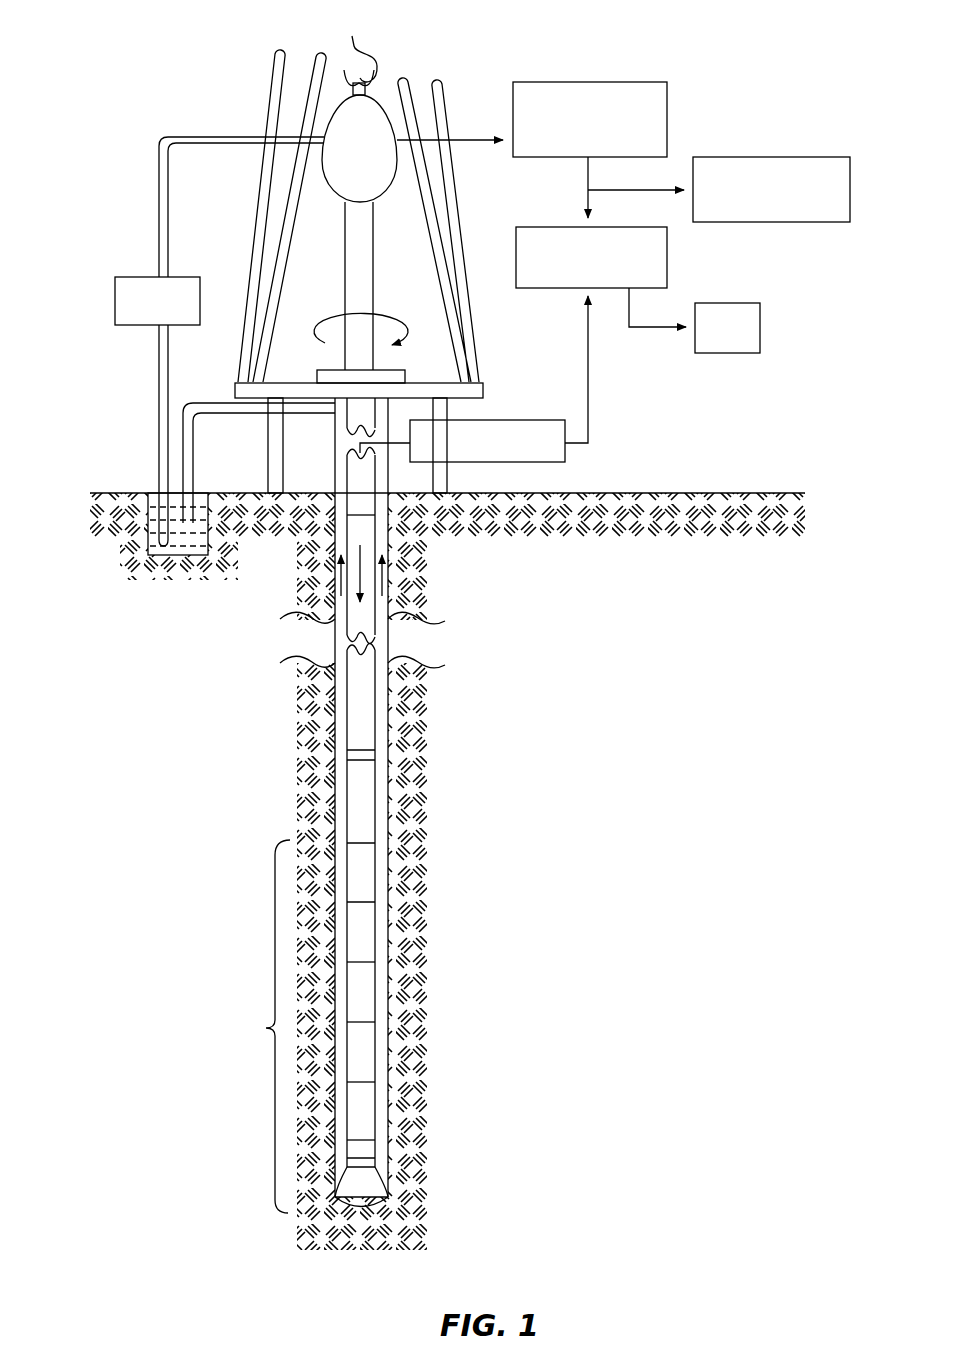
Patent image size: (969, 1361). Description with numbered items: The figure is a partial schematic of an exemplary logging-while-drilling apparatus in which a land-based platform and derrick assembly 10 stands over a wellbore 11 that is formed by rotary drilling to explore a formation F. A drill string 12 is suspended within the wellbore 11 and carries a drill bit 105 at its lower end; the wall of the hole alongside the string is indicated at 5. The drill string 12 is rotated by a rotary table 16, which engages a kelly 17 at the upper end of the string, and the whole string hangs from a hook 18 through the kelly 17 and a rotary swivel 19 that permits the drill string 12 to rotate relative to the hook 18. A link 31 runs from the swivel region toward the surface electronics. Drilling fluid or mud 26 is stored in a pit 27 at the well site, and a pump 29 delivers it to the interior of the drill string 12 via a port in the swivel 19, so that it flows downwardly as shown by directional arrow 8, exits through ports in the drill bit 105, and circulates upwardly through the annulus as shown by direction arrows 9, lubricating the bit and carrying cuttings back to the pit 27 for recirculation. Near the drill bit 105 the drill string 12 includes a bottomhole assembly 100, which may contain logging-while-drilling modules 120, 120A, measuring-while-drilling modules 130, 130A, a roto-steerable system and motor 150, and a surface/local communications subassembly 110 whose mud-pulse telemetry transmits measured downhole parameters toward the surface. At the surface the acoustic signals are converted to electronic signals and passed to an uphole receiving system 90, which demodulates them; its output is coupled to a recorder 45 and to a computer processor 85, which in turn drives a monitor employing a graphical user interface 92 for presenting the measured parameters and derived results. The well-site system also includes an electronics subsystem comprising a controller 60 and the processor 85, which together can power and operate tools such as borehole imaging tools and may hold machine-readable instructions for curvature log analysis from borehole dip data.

The platform and derrick assembly 10 is at (160, 86).
The hook 18 is at (352, 42).
The rotary swivel 19 is at (342, 168).
The kelly 17 is at (362, 225).
The telemetry link to receiver 31 is at (398, 147).
The rotary table 16 is at (398, 372).
The drill string 12 is at (358, 506).
The wellbore 11 is at (383, 506).
The pump 29 is at (134, 326).
The pit 27 is at (150, 485).
The drilling fluid or mud 26 is at (193, 557).
The direction arrows 9 is at (342, 580).
The directional arrow 8 is at (358, 607).
The borehole wall 5 is at (300, 727).
The formation F is at (541, 530).
The controller 60 is at (565, 460).
The uphole receiving system 90 is at (612, 82).
The recorder 45 is at (775, 157).
The computer processor 85 is at (667, 258).
The graphical user interface 92 is at (760, 330).
The bottomhole assembly 100 is at (257, 1026).
The surface/local communications subassembly 110 is at (368, 877).
The logging-while-drilling module 120 is at (368, 936).
The measuring-while-drilling module 130 is at (378, 983).
The logging-while-drilling module 120A is at (368, 1046).
The measuring-while-drilling module 130A is at (368, 1113).
The roto-steerable system and motor 150 is at (368, 1151).
The drill bit 105 is at (368, 1186).